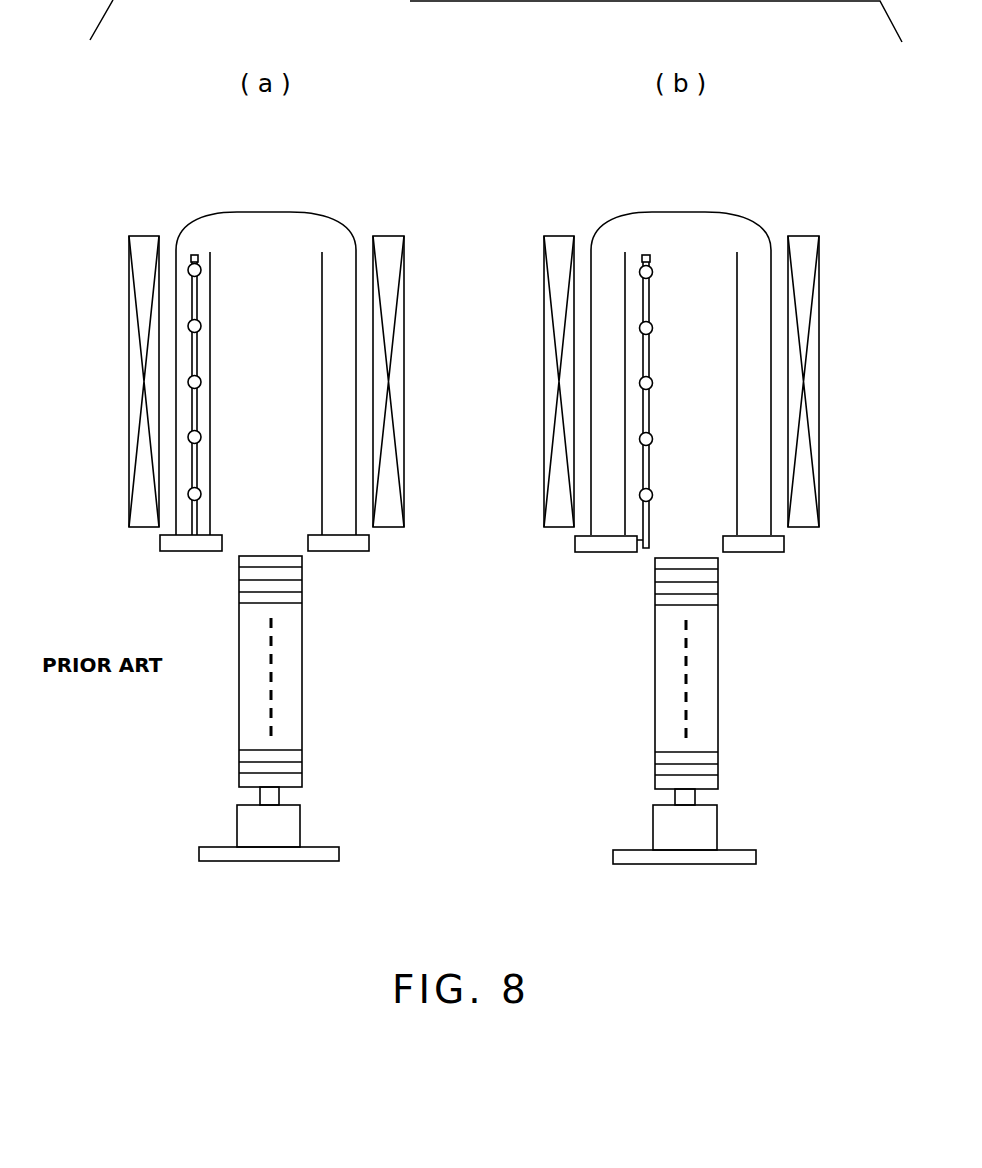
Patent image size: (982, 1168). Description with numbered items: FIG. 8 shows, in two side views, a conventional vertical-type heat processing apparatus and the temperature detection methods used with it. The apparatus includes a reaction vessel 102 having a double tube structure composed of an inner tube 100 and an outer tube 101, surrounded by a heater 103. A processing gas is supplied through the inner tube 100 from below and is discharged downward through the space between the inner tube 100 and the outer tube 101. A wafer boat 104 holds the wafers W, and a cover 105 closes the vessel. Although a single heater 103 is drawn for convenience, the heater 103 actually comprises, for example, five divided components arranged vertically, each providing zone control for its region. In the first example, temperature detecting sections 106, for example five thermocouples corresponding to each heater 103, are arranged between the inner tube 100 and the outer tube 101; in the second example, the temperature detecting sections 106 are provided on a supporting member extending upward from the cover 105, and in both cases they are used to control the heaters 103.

The inner tube 100 is at (322, 272).
The outer tube 101 is at (267, 212).
The reaction vessel 102 is at (472, 345).
The heater 103 is at (127, 382).
The wafer boat 104 is at (302, 707).
The cover 105 is at (339, 853).
The temperature detecting sections 106 is at (189, 494).
The wafer W is at (280, 606).